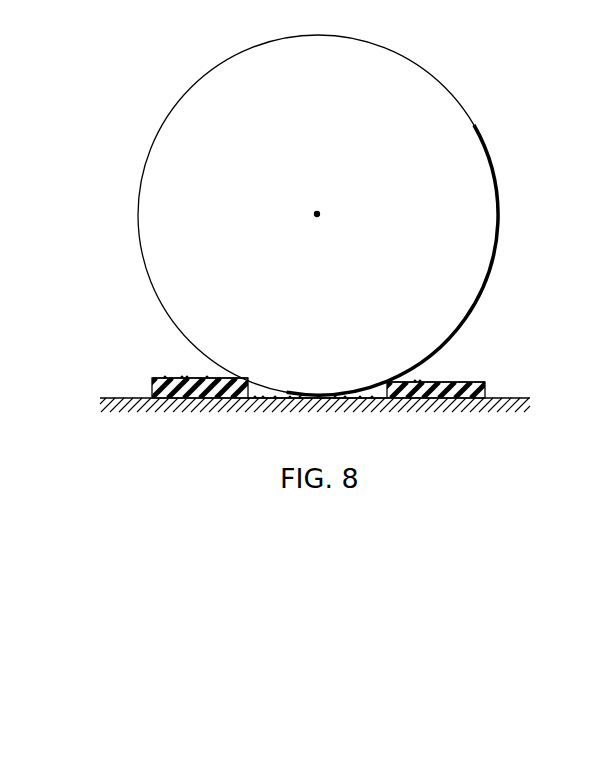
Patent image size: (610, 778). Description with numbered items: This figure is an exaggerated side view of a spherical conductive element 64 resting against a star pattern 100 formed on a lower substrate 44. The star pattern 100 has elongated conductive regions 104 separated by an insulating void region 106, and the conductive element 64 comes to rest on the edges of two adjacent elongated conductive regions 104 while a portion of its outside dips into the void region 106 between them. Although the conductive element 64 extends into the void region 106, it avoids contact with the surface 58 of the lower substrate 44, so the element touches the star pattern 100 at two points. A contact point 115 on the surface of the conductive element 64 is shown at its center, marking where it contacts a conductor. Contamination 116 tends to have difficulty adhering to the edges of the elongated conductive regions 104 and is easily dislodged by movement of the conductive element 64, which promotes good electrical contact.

The spherical conductive element 64 is at (462, 113).
The contact point 115 is at (317, 214).
The lower substrate 44 is at (530, 398).
The surface of lower substrate 58 is at (527, 398).
The star pattern 100 is at (186, 398).
The elongated conductive regions 104 is at (151, 380).
The void region 106 is at (279, 400).
The contamination 116 is at (207, 377).